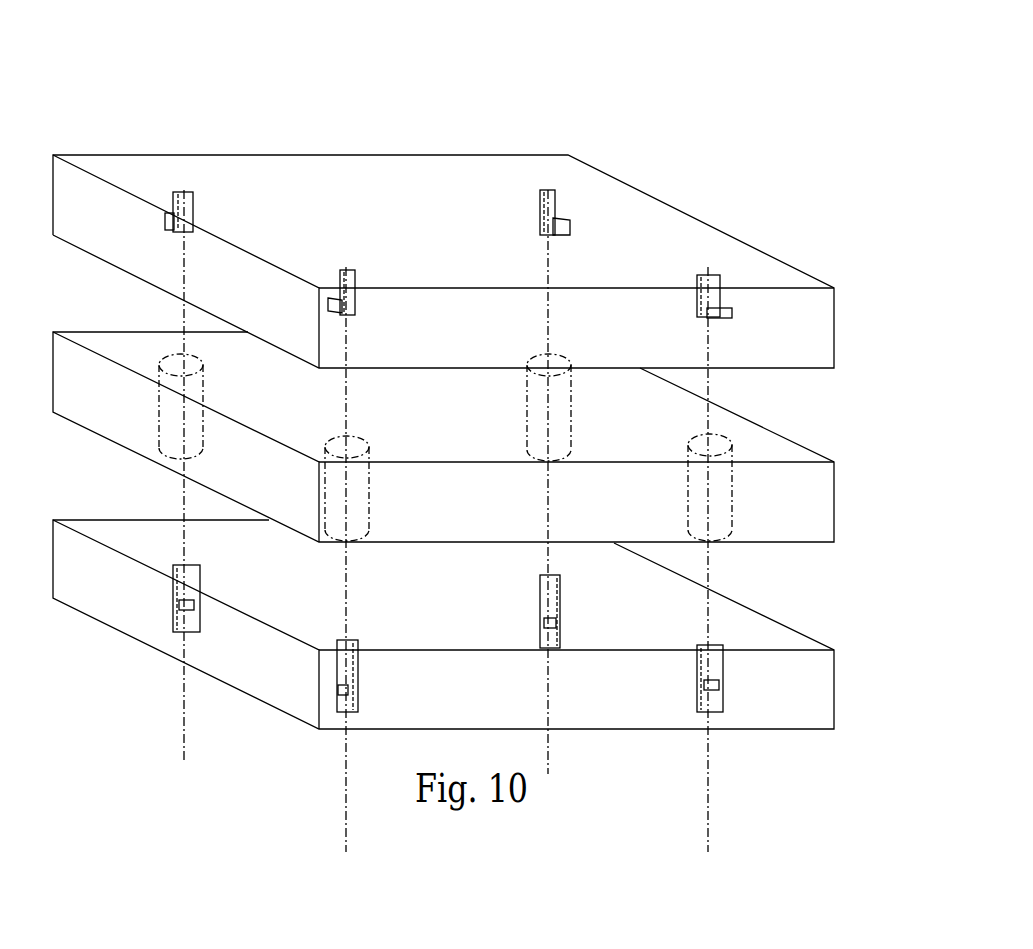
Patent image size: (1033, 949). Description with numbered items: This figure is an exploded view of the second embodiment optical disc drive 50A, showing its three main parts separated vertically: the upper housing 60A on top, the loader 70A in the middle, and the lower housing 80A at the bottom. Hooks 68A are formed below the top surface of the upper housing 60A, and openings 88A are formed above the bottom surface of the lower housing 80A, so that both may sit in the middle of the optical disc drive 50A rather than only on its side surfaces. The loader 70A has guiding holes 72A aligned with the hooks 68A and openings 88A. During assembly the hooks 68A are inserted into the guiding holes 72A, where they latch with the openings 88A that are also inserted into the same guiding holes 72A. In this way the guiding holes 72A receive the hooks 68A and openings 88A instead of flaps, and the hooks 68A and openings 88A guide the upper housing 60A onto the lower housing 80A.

The second embodiment optical disc drive 50A is at (766, 125).
The upper housing 60A is at (740, 260).
The hooks 68A is at (197, 195).
The loader 70A is at (773, 450).
The guiding holes 72A is at (360, 490).
The lower housing 80A is at (808, 697).
The openings 88A is at (338, 688).